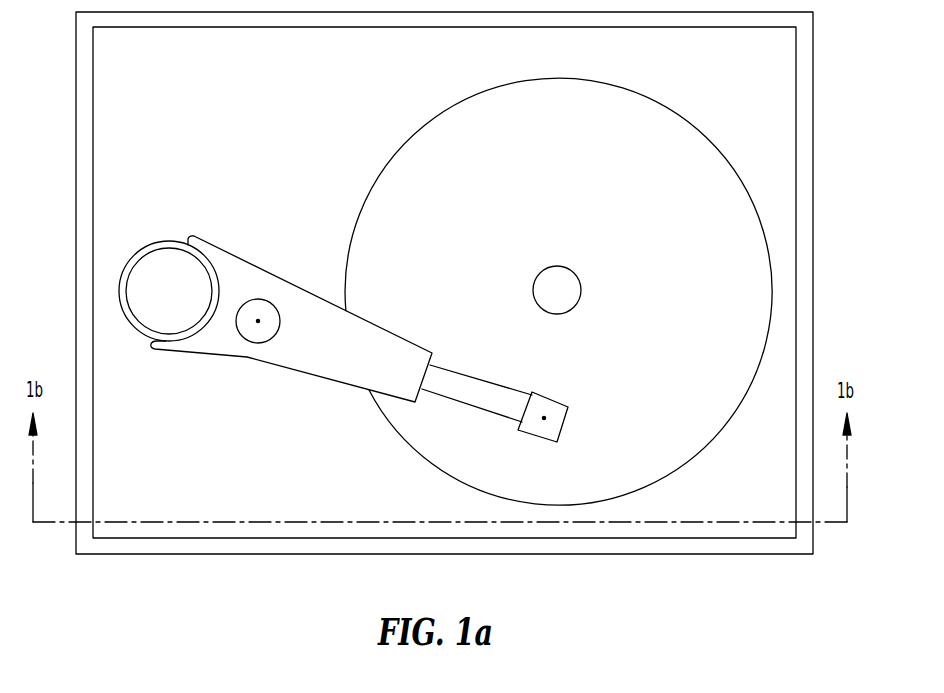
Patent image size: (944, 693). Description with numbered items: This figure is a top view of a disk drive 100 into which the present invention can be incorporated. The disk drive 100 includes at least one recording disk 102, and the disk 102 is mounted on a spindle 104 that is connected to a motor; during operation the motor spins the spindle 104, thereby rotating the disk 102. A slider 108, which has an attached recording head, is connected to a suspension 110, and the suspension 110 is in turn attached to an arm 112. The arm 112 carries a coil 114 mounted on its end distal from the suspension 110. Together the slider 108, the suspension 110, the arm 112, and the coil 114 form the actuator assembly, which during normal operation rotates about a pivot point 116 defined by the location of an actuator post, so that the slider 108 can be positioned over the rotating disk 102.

The disk drive 100 is at (648, 578).
The recording disk 102 is at (680, 130).
The spindle 104 is at (570, 282).
The slider 108 is at (562, 413).
The suspension 110 is at (482, 402).
The arm 112 is at (322, 372).
The coil 114 is at (140, 242).
The pivot point 116 is at (252, 300).